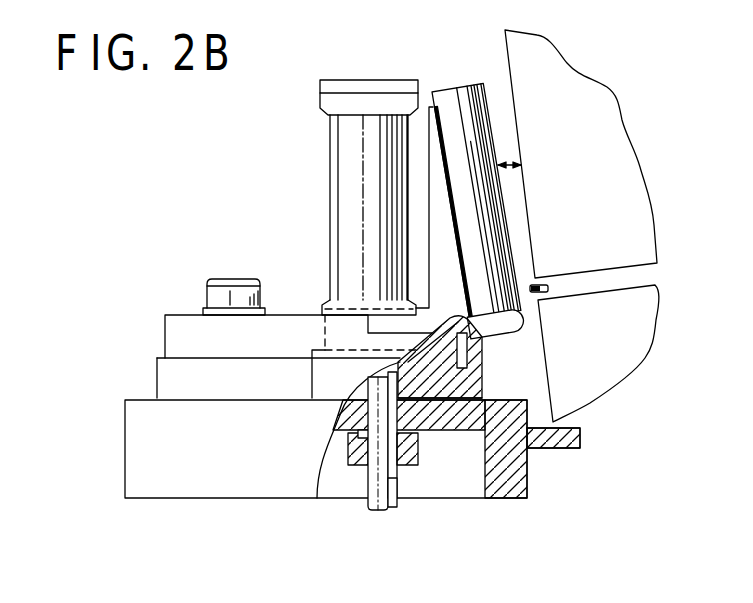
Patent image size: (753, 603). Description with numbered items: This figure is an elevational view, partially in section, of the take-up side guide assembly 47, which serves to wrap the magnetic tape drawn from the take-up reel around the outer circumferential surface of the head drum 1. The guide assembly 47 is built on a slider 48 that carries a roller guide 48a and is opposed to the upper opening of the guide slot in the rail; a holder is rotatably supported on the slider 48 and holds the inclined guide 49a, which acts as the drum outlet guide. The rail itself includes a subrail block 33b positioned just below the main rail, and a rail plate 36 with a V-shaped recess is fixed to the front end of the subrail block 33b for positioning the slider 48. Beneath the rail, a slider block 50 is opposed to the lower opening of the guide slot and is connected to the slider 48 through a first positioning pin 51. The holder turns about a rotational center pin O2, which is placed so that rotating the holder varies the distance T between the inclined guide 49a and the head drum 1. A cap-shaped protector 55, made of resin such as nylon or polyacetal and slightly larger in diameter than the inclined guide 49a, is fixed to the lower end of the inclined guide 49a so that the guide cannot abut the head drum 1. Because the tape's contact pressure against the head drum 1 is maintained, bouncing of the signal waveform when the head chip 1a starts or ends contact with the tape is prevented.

The head drum 1 is at (572, 88).
The head chip 1a is at (540, 283).
The distance between inclined guide and head drum T is at (504, 163).
The subrail block 33b is at (138, 460).
The rail plate 36 is at (182, 332).
The guide assembly 47 is at (292, 241).
The slider 48 is at (470, 383).
The roller guide 48a is at (347, 184).
The inclined guide 49a is at (481, 116).
The slider block 50 is at (352, 467).
The first positioning pin 51 is at (413, 467).
The cap-shaped protector 55 is at (517, 323).
The rotational center (pin) O2 is at (462, 345).